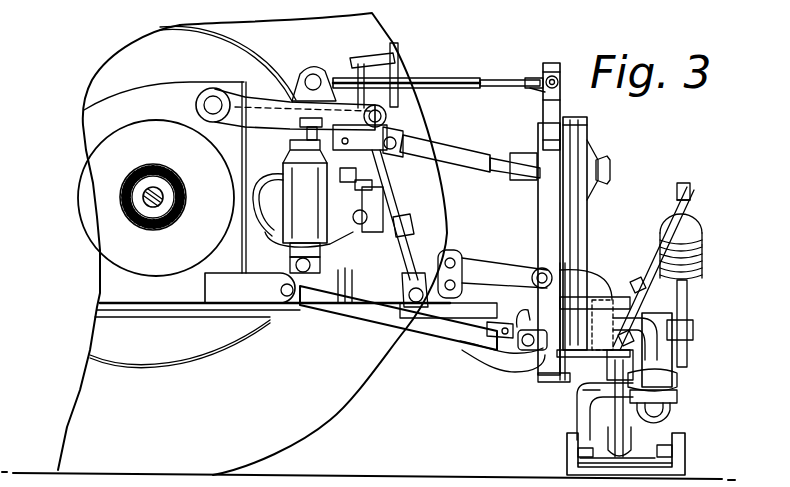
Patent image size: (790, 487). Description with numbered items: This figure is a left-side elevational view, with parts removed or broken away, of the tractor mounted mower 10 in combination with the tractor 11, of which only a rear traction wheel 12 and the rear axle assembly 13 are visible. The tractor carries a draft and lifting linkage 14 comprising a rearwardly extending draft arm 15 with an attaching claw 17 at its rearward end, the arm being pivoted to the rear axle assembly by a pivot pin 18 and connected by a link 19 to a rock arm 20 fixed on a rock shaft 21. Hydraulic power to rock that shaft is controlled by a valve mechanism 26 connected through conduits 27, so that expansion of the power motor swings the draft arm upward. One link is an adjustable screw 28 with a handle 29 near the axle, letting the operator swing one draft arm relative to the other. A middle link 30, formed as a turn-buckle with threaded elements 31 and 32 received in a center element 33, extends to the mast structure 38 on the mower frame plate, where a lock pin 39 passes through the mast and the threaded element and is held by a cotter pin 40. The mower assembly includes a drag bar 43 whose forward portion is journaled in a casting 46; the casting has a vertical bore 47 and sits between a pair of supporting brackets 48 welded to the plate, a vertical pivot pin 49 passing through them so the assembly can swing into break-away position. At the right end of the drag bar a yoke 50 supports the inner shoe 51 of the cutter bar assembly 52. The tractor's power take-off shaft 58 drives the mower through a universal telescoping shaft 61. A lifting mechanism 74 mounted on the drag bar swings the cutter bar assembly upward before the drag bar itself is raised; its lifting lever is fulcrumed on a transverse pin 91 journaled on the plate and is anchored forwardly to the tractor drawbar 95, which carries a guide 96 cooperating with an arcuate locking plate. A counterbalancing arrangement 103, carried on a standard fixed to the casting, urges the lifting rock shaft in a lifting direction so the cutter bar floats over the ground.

The tractor mounted mower 10 is at (683, 392).
The tractor 11 is at (374, 387).
The rear traction wheel 12 is at (254, 244).
The rear axle assembly 13 is at (156, 198).
The draft and lifting linkage 14 is at (383, 336).
The draft arm 15 is at (431, 326).
The attaching claw 17 is at (494, 354).
The pivot pin 18 is at (250, 288).
The link 19 is at (404, 252).
The rock arm 20 is at (281, 119).
The rock shaft 21 is at (212, 105).
The valve mechanism 26 is at (358, 200).
The conduit 27 is at (282, 172).
The adjustable screw 28 is at (385, 69).
The handle 29 is at (380, 58).
The middle link 30 is at (445, 68).
The threaded element 31 is at (339, 79).
The threaded element 32 is at (526, 79).
The center element 33 is at (480, 80).
The mast structure 38 is at (558, 70).
The lock pin 39 is at (540, 90).
The cotter pin 40 is at (552, 75).
The drag bar 43 is at (678, 397).
The casting 46 is at (601, 305).
The vertical bore 47 is at (578, 388).
The supporting bracket 48 is at (567, 274).
The vertical pivot pin 49 is at (583, 392).
The yoke 50 is at (658, 420).
The inner shoe 51 is at (685, 471).
The cutter bar assembly 52 is at (640, 459).
The power take-off shaft 58 is at (362, 151).
The universal telescoping shaft 61 is at (477, 150).
The lifting mechanism 74 is at (503, 248).
The transverse pin 91 is at (318, 291).
The drawbar 95 is at (184, 305).
The guide 96 is at (346, 275).
The counterbalancing arrangement 103 is at (712, 233).